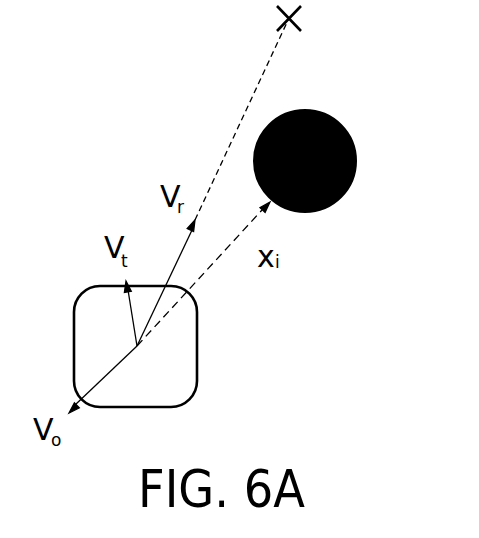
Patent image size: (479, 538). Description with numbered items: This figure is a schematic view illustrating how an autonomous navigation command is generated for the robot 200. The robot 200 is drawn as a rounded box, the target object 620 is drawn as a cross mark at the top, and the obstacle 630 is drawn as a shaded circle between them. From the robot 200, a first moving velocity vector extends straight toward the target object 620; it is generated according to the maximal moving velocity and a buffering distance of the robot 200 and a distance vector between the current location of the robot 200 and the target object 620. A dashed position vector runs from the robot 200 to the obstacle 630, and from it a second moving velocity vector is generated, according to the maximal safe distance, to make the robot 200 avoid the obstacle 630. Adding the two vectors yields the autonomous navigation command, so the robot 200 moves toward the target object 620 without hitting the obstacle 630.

The target object 620 is at (289, 19).
The obstacle 630 is at (357, 162).
The robot 200 is at (197, 347).